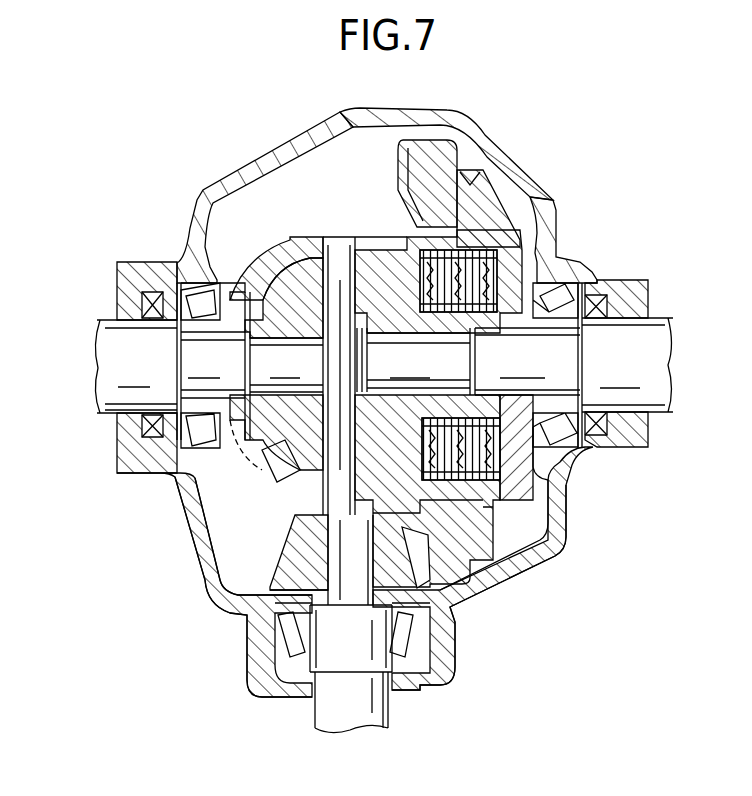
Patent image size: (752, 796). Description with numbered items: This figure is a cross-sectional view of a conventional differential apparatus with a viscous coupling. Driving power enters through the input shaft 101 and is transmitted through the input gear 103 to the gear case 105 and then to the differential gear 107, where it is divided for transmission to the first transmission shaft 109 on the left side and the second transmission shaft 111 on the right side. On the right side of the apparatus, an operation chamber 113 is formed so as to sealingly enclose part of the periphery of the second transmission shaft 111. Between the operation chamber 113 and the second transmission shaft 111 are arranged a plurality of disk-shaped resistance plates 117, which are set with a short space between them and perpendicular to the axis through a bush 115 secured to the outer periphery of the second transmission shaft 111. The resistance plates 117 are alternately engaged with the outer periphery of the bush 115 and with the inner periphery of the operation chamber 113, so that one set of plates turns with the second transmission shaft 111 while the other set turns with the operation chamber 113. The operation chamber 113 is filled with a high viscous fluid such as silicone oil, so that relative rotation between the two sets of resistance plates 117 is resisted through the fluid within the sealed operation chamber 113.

The input shaft 101 is at (333, 720).
The input gear 103 is at (450, 606).
The gear case 105 is at (373, 240).
The differential gear 107 is at (290, 445).
The first transmission shaft 109 is at (113, 377).
The second transmission shaft 111 is at (542, 395).
The operation chamber 113 is at (485, 290).
The bush 115 is at (447, 332).
The resistance plates 117 is at (478, 275).